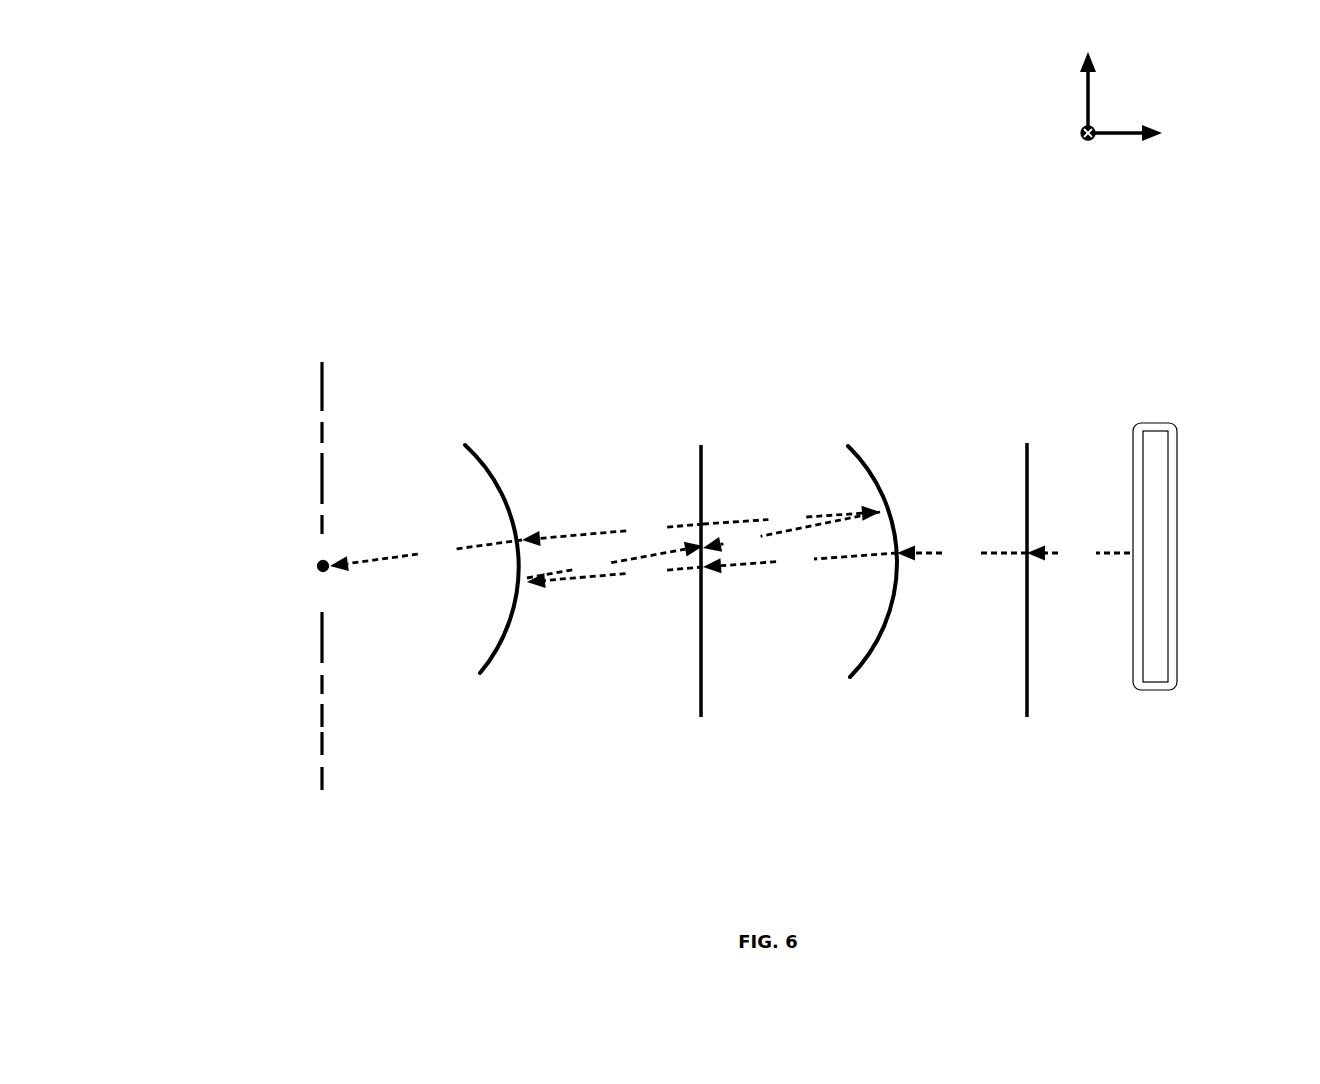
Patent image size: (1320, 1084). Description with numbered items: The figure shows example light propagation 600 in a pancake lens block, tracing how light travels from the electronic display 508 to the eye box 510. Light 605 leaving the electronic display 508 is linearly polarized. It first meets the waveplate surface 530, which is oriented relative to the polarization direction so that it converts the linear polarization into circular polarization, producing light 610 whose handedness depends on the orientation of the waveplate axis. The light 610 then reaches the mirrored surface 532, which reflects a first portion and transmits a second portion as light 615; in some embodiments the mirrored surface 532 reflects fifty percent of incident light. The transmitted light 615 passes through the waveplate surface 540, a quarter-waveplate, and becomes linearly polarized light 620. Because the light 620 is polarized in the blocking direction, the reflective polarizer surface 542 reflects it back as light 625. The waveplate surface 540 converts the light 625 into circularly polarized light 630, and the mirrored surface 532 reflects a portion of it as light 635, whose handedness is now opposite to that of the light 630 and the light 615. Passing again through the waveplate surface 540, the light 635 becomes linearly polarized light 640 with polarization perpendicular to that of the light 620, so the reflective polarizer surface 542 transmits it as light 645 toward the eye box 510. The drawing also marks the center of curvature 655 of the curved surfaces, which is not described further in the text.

The light propagation 600 is at (145, 101).
The electronic display 508 is at (1147, 423).
The eye box 510 is at (323, 770).
The waveplate surface 530 is at (1025, 455).
The mirrored surface 532 is at (860, 460).
The waveplate surface 540 is at (700, 450).
The reflective polarizer surface 542 is at (466, 463).
The light 605 is at (1078, 552).
The light 610 is at (962, 552).
The light 615 is at (800, 561).
The light 620 is at (615, 577).
The light 625 is at (615, 560).
The light 630 is at (791, 532).
The light 635 is at (791, 513).
The light 640 is at (612, 531).
The light 645 is at (426, 553).
The center of curvature 655 is at (322, 566).